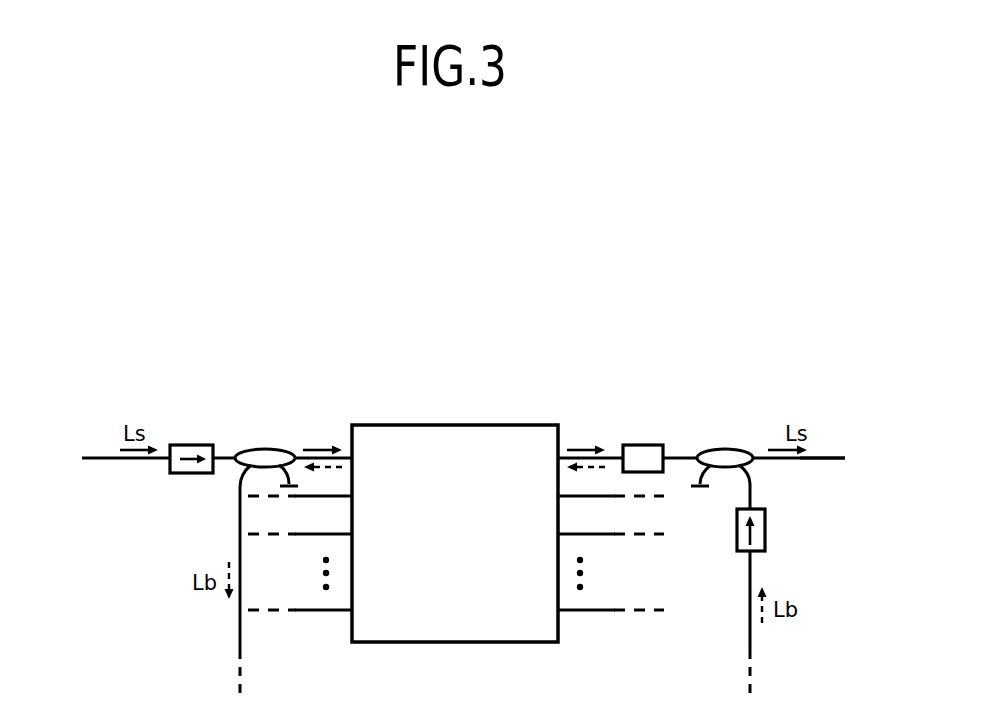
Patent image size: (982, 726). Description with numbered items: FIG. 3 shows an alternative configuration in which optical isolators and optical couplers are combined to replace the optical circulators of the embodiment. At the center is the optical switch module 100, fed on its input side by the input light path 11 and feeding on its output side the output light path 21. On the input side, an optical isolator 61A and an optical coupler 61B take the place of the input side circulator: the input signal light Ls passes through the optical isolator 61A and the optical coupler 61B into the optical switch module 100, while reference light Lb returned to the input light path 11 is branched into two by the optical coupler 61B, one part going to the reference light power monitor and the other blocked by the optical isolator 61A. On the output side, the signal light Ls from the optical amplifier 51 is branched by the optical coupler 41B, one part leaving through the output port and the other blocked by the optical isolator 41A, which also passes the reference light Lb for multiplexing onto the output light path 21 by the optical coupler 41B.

The input light path 11 is at (102, 455).
The output light path 21 is at (846, 446).
The optical isolator 61A is at (192, 445).
The optical coupler 61B is at (263, 450).
The optical switch module 100 is at (465, 425).
The optical amplifier 51 is at (645, 445).
The optical coupler 41B is at (725, 449).
The optical isolator 41A is at (765, 525).